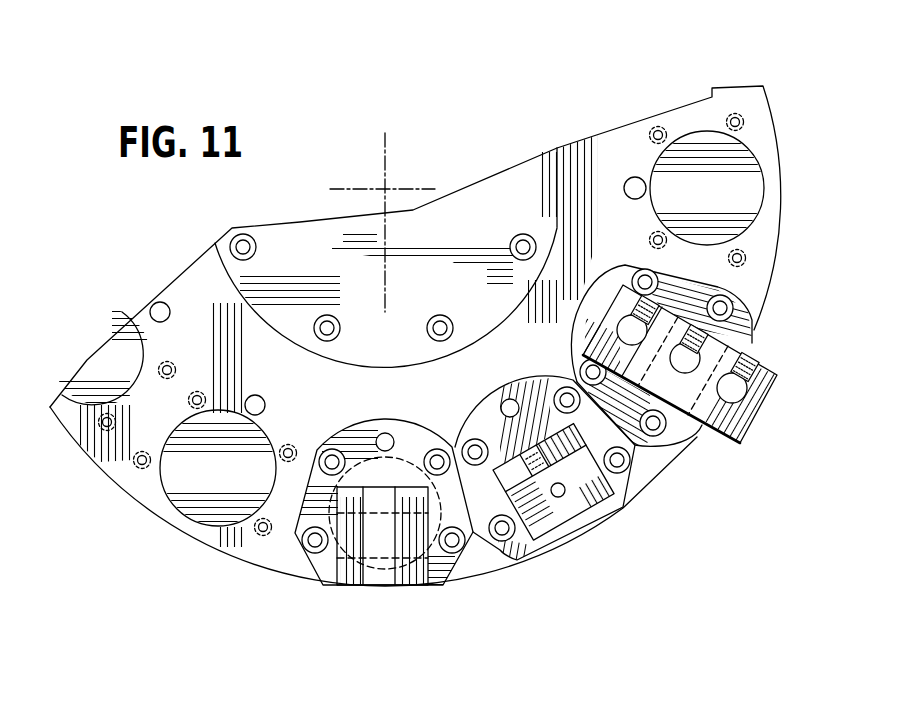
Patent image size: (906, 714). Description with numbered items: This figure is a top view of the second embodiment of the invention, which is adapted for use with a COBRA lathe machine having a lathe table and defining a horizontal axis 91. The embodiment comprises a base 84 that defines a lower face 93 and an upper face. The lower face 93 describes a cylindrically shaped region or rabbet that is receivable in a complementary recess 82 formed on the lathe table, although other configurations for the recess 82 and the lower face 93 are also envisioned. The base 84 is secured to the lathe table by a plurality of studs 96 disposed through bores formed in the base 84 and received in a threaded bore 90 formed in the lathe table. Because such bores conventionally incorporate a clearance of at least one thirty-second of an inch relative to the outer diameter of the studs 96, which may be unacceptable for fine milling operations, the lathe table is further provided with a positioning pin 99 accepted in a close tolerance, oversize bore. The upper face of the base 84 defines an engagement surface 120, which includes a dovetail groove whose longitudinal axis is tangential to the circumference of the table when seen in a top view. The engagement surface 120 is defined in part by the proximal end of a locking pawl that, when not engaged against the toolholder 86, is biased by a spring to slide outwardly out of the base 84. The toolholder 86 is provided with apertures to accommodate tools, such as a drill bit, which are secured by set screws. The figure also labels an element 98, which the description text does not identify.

The recess 82 is at (732, 190).
The base 84 is at (737, 325).
The toolholder 86 is at (723, 441).
The threaded bore 90 is at (520, 557).
The horizontal axis 91 is at (385, 188).
The lower face 93 is at (660, 126).
The studs 96 is at (321, 456).
The fastener 98 is at (308, 550).
The positioning pin 99 is at (634, 177).
The engagement surface 120 is at (553, 541).